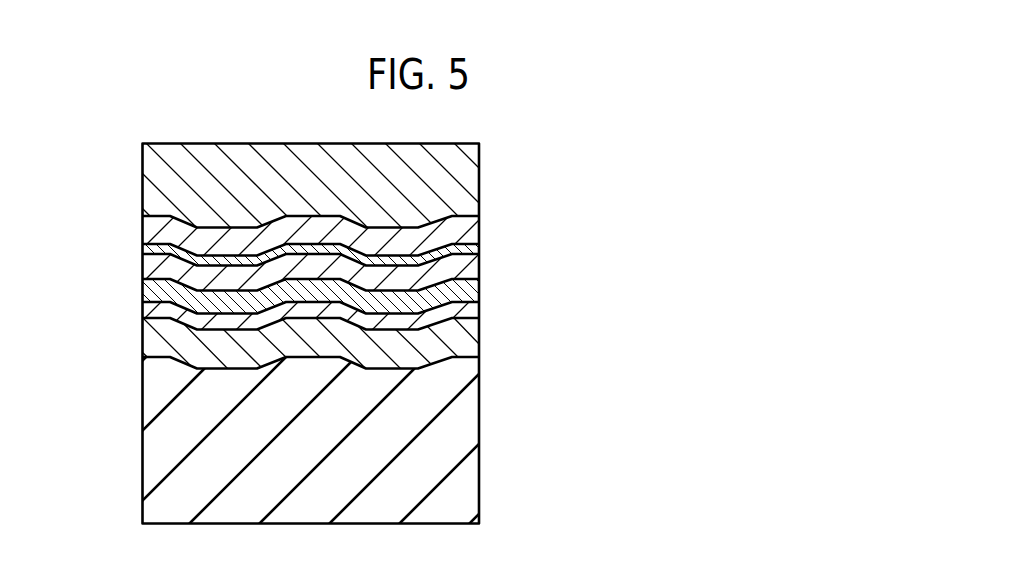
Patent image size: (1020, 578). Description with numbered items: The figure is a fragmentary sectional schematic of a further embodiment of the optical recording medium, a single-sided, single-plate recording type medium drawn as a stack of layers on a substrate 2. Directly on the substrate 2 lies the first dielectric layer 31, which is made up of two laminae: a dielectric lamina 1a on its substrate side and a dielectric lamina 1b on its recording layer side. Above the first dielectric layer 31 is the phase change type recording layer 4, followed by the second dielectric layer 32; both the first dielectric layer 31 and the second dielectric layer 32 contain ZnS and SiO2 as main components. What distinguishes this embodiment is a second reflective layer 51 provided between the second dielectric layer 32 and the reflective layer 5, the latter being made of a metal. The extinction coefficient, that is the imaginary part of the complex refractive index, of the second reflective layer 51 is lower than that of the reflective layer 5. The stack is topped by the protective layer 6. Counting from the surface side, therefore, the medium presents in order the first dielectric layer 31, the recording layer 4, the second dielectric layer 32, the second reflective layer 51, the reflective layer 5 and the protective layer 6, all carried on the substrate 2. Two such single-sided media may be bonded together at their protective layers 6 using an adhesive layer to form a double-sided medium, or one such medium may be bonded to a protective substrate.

The protective layer 6 is at (472, 188).
The reflective layer 5 is at (472, 223).
The second reflective layer 51 is at (472, 253).
The second dielectric layer 32 is at (472, 270).
The phase change type recording layer 4 is at (474, 287).
The dielectric lamina 1b is at (474, 312).
The dielectric lamina 1a is at (474, 338).
The first dielectric layer 31 is at (402, 362).
The substrate 2 is at (473, 433).